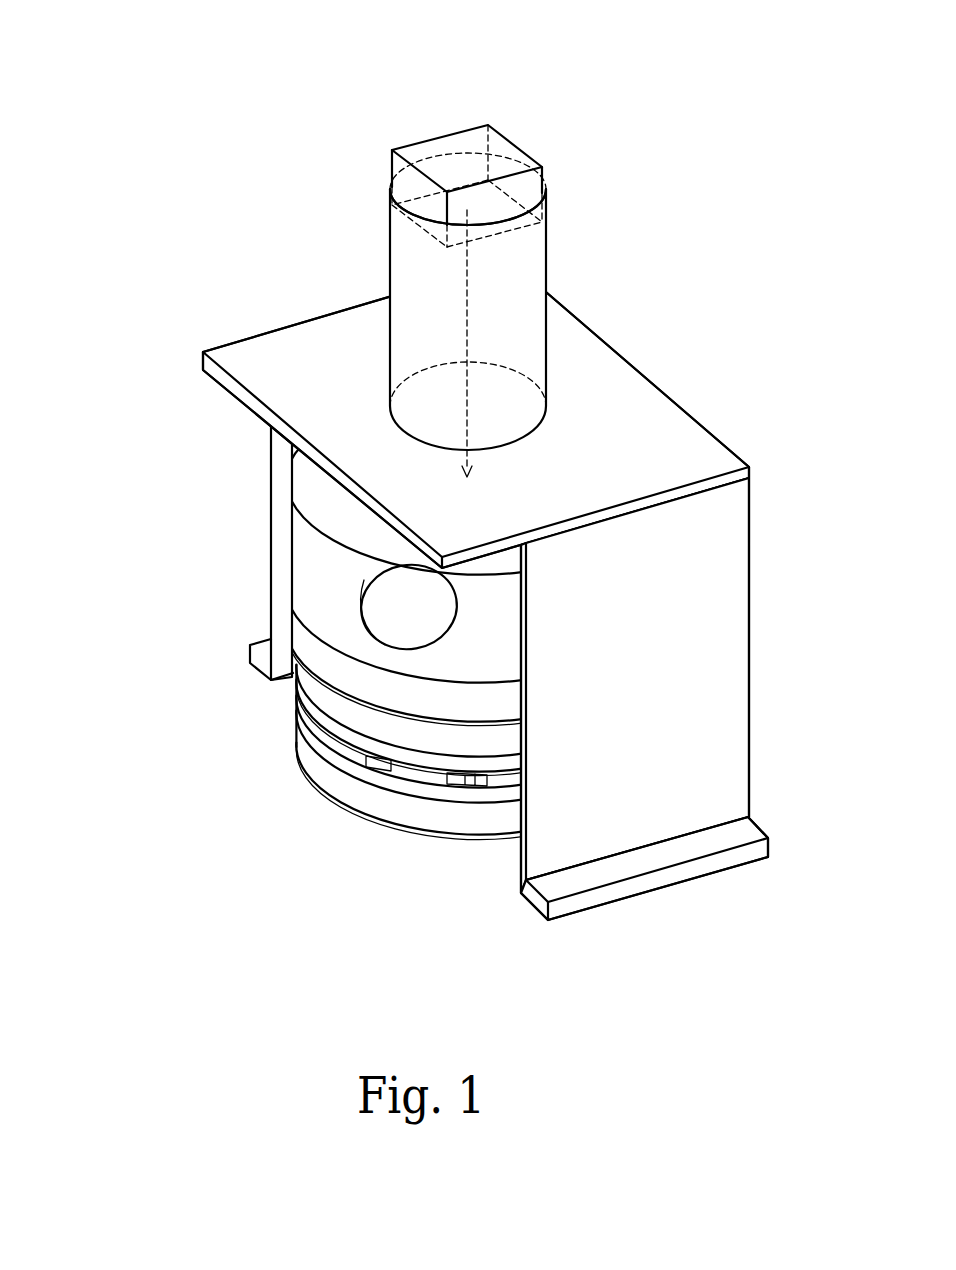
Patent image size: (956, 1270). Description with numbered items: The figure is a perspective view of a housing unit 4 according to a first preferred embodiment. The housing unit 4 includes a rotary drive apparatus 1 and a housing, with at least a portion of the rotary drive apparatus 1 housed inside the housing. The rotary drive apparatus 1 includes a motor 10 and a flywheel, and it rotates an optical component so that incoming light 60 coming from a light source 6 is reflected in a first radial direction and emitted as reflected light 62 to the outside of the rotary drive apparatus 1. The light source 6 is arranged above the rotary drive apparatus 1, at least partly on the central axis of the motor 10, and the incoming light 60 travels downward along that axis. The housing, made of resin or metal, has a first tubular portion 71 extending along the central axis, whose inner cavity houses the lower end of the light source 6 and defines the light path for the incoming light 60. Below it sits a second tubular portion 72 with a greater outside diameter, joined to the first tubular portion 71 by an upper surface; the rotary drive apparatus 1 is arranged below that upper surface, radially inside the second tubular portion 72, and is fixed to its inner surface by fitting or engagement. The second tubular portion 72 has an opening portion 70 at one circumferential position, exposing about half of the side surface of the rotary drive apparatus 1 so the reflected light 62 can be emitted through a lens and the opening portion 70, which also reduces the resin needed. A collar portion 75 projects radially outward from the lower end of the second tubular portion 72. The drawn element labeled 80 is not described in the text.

The rotary drive apparatus 1 is at (101, 551).
The housing unit 4 is at (334, 113).
The light source 6 is at (505, 148).
The incoming light 60 is at (463, 303).
The first tubular portion 71 is at (527, 342).
The second tubular portion 72 is at (725, 550).
The collar portion 75 is at (684, 868).
The support post 80 is at (240, 581).
The motor 10 is at (242, 712).
The reflected light 62 is at (413, 607).
The opening portion 70 is at (467, 884).